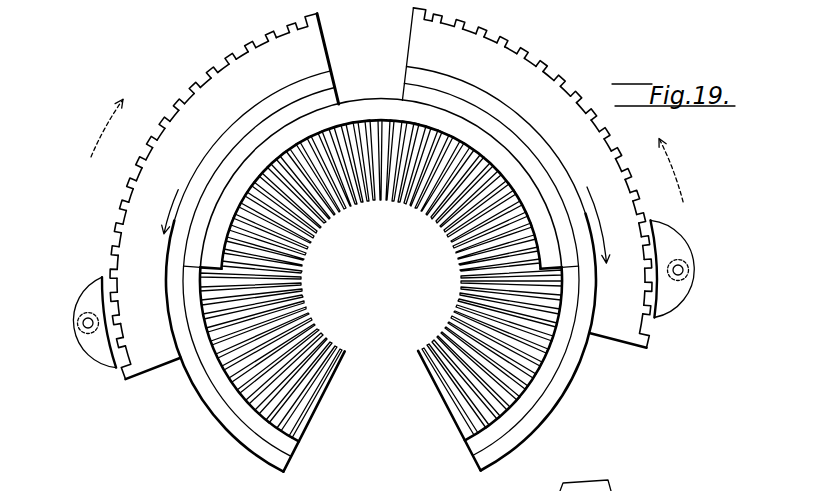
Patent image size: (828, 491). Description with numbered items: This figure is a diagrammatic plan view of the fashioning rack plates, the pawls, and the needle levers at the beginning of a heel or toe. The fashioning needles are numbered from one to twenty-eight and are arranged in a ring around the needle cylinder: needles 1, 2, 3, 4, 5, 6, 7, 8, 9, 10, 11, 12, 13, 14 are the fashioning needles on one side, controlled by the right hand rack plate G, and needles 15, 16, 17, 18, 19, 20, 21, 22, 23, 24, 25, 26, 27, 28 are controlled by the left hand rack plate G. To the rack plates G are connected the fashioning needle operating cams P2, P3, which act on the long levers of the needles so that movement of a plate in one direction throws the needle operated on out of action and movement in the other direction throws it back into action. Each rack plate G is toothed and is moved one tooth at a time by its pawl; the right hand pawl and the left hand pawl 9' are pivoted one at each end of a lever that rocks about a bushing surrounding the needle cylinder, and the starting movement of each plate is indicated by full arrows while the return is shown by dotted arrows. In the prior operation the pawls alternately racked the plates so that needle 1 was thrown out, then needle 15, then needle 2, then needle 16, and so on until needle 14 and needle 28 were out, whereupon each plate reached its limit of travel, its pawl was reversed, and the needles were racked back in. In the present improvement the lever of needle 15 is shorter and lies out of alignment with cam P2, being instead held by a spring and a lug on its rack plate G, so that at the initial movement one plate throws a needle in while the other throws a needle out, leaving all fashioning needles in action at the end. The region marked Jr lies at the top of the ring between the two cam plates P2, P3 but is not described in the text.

The fashioning needle 1 is at (647, 217).
The fashioning needle 2 is at (640, 194).
The fashioning needle 3 is at (632, 172).
The fashioning needle 4 is at (621, 151).
The fashioning needle 5 is at (609, 130).
The fashioning needle 6 is at (595, 111).
The fashioning needle 7 is at (580, 93).
The fashioning needle 8 is at (563, 77).
The fashioning needle 9 is at (638, 180).
The fashioning needle 10 is at (525, 48).
The fashioning needle 11 is at (505, 37).
The fashioning needle 12 is at (483, 27).
The fashioning needle 13 is at (461, 19).
The fashioning needle 14 is at (438, 13).
The fashioning needle 15 is at (116, 344).
The fashioning needle 16 is at (113, 227).
The fashioning needle 17 is at (119, 204).
The fashioning needle 18 is at (126, 181).
The fashioning needle 19 is at (136, 160).
The fashioning needle 20 is at (147, 139).
The fashioning needle 21 is at (160, 120).
The fashioning needle 22 is at (175, 101).
The fashioning needle 23 is at (191, 84).
The fashioning needle 24 is at (209, 68).
The fashioning needle 25 is at (228, 54).
The fashioning needle 26 is at (248, 42).
The fashioning needle 27 is at (268, 31).
The fashioning needle 28 is at (291, 22).
The pawl 9' is at (74, 312).
The fashioning needle operating cam P2 is at (276, 112).
The fashioning needle operating cam P3 is at (501, 115).
The junction ring Jr is at (377, 104).
The fashioning rack plate G is at (360, 77).